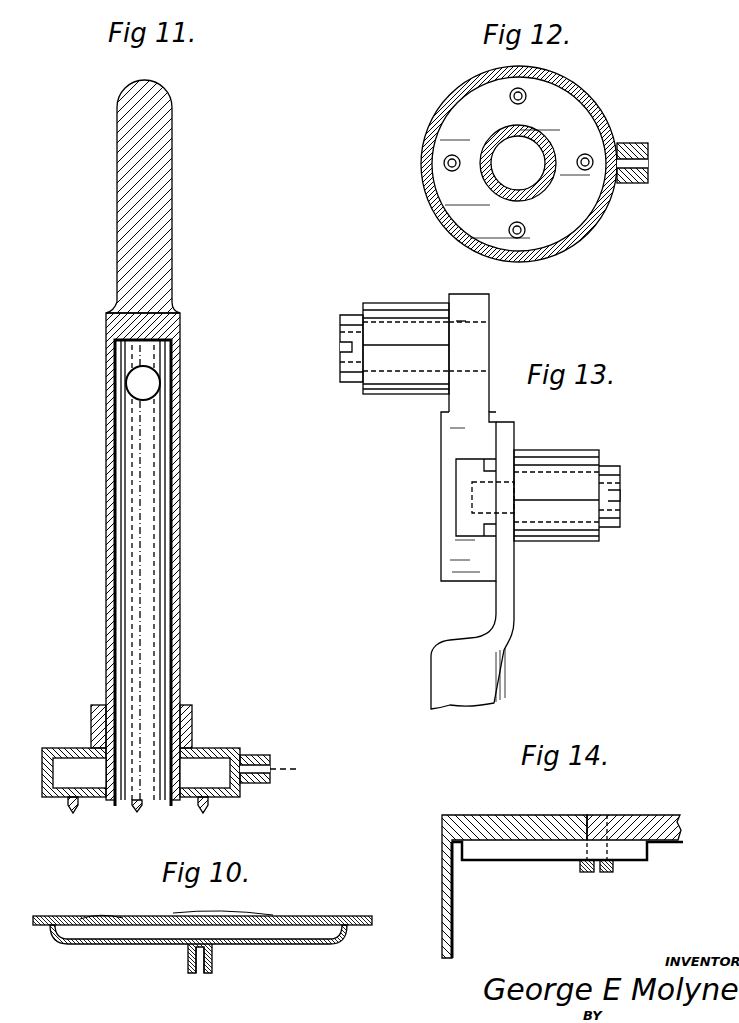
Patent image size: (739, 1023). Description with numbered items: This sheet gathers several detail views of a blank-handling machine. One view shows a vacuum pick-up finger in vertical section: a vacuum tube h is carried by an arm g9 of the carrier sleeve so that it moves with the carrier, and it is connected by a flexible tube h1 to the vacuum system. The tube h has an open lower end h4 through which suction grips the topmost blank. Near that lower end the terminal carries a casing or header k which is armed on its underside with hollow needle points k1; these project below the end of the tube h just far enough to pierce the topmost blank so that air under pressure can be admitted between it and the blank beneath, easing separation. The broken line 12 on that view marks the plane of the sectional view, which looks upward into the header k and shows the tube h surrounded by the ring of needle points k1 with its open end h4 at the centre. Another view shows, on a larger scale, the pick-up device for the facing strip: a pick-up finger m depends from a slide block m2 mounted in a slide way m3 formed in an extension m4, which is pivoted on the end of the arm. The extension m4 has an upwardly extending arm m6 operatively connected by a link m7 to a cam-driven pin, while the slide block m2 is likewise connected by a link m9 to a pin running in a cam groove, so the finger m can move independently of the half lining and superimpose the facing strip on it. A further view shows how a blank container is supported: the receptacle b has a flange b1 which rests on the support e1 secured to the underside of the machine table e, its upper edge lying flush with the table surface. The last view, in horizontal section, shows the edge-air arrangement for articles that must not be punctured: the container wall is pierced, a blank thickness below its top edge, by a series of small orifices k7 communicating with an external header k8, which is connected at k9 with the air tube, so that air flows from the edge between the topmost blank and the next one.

In FIG. 11, the arm g9 is at (168, 182).
In FIG. 11, the vacuum tube h is at (180, 412).
In FIG. 12, the vacuum tube h is at (543, 193).
In FIG. 11, the flexible tube h1 is at (143, 383).
In FIG. 11, the open lower end h4 is at (158, 800).
In FIG. 12, the open lower end h4 is at (528, 152).
In FIG. 11, the casing or header k is at (213, 762).
In FIG. 11, the hollow needle points k1 is at (136, 806).
In FIG. 12, the hollow needle points k1 is at (454, 157).
In FIG. 11, the section line 12- 12 is at (72, 769).
In FIG. 13, the link m7 is at (403, 315).
In FIG. 13, the upwardly extending arm m6 is at (484, 343).
In FIG. 13, the extension m4 is at (465, 441).
In FIG. 13, the slide way m3 is at (454, 529).
In FIG. 13, the slide block m2 is at (463, 489).
In FIG. 13, the pick-up finger m is at (472, 565).
In FIG. 13, the link m9 is at (567, 495).
In FIG. 14, the receptacle b is at (443, 855).
In FIG. 10, the receptacle b is at (360, 927).
In FIG. 14, the flange b1 is at (493, 822).
In FIG. 14, the machine table e is at (627, 813).
In FIG. 14, the support e1 is at (540, 853).
In FIG. 10, the orifices k7 is at (123, 918).
In FIG. 10, the external header k8 is at (290, 934).
In FIG. 10, the connection k9 is at (213, 963).